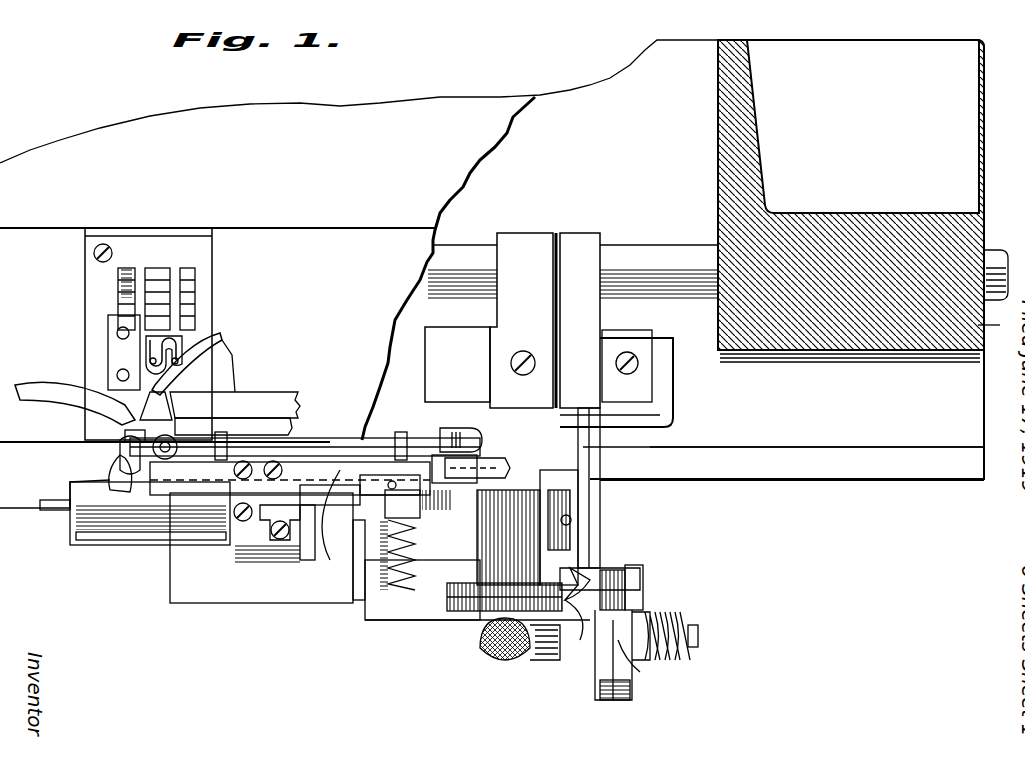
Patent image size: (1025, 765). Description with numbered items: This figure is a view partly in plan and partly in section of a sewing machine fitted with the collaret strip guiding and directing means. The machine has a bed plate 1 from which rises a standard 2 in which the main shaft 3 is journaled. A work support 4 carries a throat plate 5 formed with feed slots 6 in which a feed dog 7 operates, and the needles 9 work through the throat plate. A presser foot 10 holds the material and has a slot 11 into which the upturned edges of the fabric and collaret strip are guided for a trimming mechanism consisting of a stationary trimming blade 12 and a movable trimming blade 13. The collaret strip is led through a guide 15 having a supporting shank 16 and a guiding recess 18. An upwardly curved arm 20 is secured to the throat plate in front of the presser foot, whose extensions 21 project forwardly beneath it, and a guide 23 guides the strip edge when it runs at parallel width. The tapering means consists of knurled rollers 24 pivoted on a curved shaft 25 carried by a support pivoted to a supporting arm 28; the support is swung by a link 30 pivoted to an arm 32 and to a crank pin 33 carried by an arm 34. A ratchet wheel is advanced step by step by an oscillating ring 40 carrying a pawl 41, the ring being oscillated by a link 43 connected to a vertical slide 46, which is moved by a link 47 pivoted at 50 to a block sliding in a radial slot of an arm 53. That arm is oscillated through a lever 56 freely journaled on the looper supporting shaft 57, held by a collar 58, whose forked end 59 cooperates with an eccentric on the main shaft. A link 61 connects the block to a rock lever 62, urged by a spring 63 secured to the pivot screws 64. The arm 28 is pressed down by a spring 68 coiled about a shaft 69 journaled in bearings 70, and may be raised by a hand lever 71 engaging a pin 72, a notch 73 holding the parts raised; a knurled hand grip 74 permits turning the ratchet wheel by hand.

The bed plate 1 is at (787, 259).
The standard 2 is at (960, 325).
The main shaft 3 is at (996, 262).
The work support 4 is at (520, 289).
The throat plate 5 is at (172, 252).
The feed slots 6 is at (126, 275).
The feed dog 7 is at (112, 300).
The needles 9 is at (170, 356).
The presser foot 10 is at (240, 350).
The slot 11 is at (170, 388).
The stationary trimming blade 12 is at (260, 390).
The movable trimming blade 13 is at (78, 404).
The guide 15 is at (133, 558).
The supporting shank 16 is at (246, 528).
The guiding recess 18 is at (100, 530).
The upwardly curved arm 20 is at (118, 445).
The extensions 21 is at (110, 478).
The guide 23 is at (300, 428).
The rollers 24 is at (125, 435).
The shaft 25 is at (118, 470).
The supporting arm 28 is at (360, 490).
The link 30 is at (405, 432).
The arm 32 is at (170, 440).
The crank pin 33 is at (480, 435).
The arm 34 is at (500, 450).
The oscillating ring 40 is at (480, 612).
The pawl 41 is at (578, 610).
The link 43 is at (620, 580).
The vertical slide 46 is at (580, 580).
The link 47 is at (585, 575).
The pivot 50 is at (643, 575).
The arm 53 is at (590, 485).
The lever 56 is at (600, 470).
The looper supporting shaft 57 is at (405, 355).
The collar 58 is at (640, 335).
The forked end 59 is at (585, 240).
The link 61 is at (640, 672).
The rock lever 62 is at (600, 692).
The spring 63 is at (660, 612).
The pivot screws 64 is at (698, 636).
The spring 68 is at (418, 555).
The shaft 69 is at (420, 520).
The bearings 70 is at (370, 612).
The hand lever 71 is at (297, 528).
The pin 72 is at (340, 430).
The notch 73 is at (340, 575).
The knurled hand grip 74 is at (515, 668).